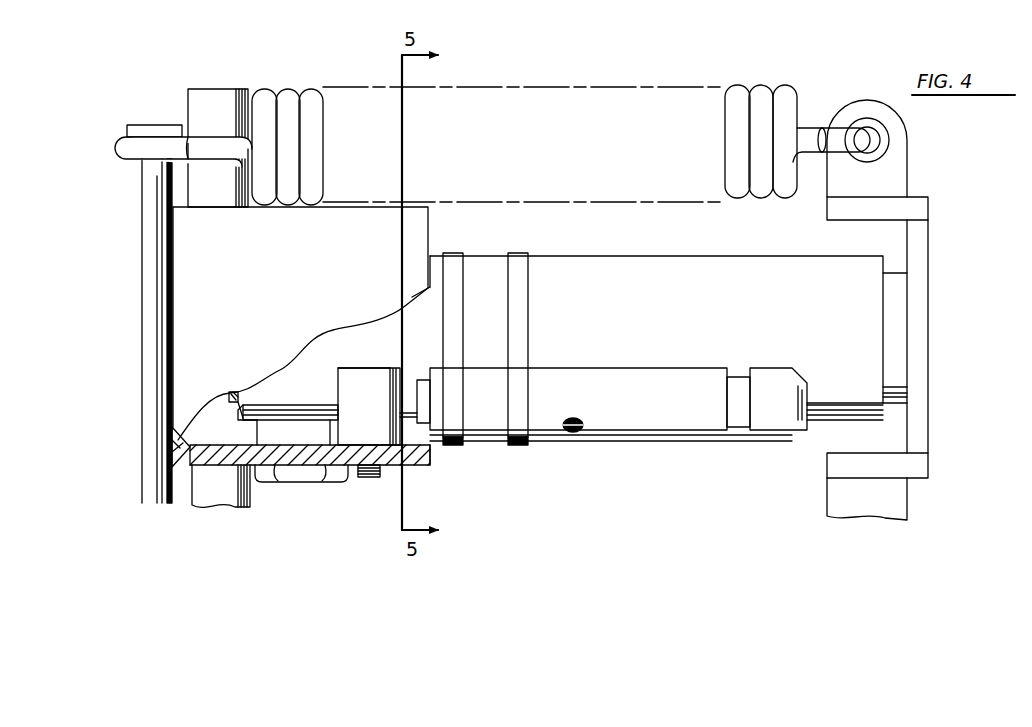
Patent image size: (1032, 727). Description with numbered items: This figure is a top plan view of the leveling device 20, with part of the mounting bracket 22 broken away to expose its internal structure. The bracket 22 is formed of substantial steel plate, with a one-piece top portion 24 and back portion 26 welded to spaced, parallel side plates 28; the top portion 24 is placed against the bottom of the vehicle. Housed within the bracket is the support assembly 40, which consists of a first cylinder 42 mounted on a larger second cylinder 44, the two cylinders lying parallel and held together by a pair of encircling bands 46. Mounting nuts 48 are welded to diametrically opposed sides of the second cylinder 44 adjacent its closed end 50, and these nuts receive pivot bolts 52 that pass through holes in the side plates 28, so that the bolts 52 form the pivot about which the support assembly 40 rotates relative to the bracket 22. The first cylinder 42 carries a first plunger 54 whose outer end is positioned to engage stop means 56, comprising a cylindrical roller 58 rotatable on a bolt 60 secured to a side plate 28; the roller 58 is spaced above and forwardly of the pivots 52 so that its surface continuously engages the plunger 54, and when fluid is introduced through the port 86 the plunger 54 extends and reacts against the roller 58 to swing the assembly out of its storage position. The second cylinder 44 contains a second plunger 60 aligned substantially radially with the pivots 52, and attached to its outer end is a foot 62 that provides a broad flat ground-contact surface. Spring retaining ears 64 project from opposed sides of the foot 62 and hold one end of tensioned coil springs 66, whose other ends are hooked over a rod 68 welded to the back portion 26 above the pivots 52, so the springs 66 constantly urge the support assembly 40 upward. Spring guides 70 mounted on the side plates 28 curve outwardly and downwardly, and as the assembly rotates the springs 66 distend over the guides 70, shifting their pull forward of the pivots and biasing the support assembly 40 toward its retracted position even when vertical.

The leveling device 20 is at (444, 243).
The mounting bracket 22 is at (327, 213).
The top portion 24 is at (300, 357).
The back portion 26 is at (168, 468).
The side plates 28 is at (430, 462).
The support assembly 40 is at (810, 424).
The first cylinder 42 is at (611, 404).
The second cylinder 44 is at (656, 329).
The encircling bands 46 is at (453, 254).
The mounting nuts 48 is at (280, 418).
The closed end 50 is at (243, 409).
The pivot bolts 52 is at (290, 477).
The first plunger 54 is at (407, 393).
The stop means 56 is at (367, 364).
The cylindrical roller 58 is at (343, 397).
The bolt 60 is at (892, 323).
The foot 62 is at (923, 231).
The spring retaining ears 64 is at (893, 173).
The coil springs 66 is at (760, 95).
The rod 68 is at (155, 303).
The spring guides 70 is at (223, 100).
The port 86 is at (577, 435).